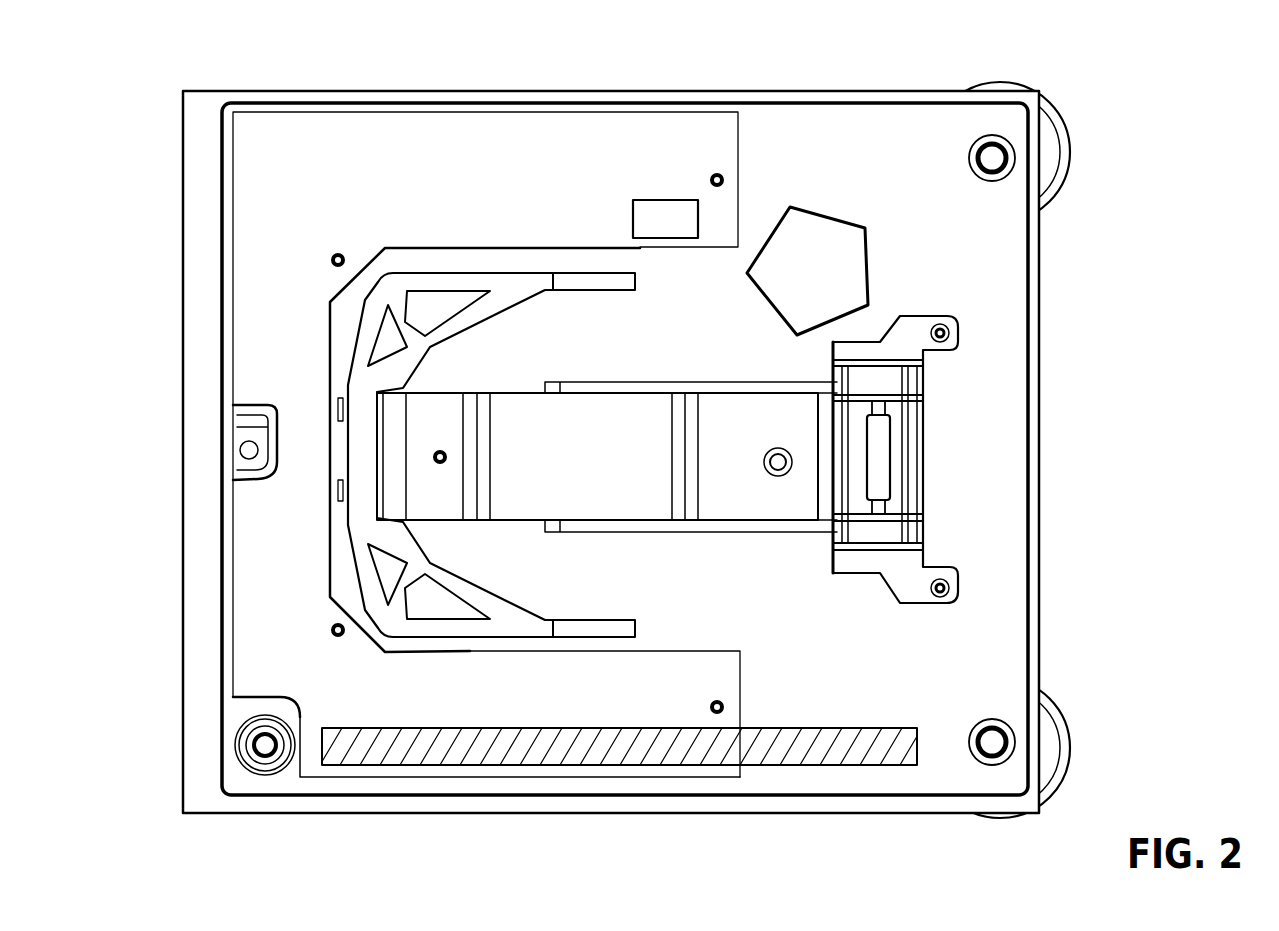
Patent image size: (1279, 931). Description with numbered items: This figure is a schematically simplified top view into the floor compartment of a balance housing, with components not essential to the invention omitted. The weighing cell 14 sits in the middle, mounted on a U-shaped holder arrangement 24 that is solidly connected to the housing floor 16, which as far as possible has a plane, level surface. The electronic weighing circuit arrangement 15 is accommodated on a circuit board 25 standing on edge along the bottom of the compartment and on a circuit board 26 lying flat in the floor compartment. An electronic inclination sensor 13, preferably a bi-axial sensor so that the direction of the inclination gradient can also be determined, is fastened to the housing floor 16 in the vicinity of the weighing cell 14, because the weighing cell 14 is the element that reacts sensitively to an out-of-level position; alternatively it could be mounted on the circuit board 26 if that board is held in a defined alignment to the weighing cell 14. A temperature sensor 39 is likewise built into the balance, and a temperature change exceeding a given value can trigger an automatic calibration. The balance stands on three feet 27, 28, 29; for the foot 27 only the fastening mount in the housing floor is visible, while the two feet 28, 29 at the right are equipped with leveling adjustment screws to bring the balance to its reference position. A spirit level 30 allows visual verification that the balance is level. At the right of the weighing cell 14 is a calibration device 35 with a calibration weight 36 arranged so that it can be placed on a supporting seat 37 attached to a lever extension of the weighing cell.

The inclination sensor 13 is at (800, 225).
The weighing cell 14 is at (607, 457).
The electronic weighing circuit arrangement 15 is at (318, 786).
The housing floor 16 is at (972, 637).
The U-shaped holder arrangement 24 is at (510, 283).
The circuit board 25 is at (572, 743).
The circuit board 26 is at (334, 168).
The foot 27 is at (248, 450).
The foot 28 is at (1052, 730).
The foot 29 is at (1053, 148).
The spirit level 30 is at (262, 745).
The calibration device 35 is at (935, 488).
The calibration weight 36 is at (877, 458).
The supporting seat 37 is at (925, 395).
The temperature sensor 39 is at (653, 218).